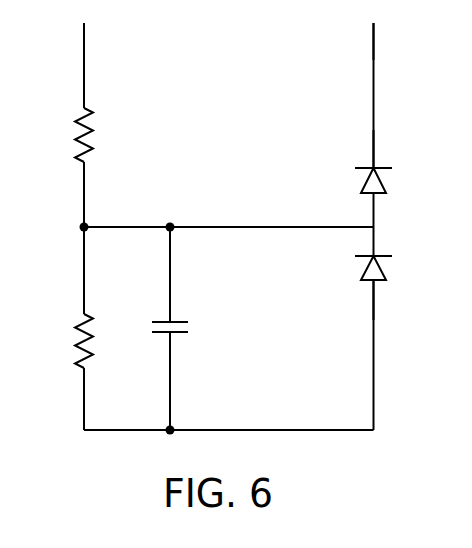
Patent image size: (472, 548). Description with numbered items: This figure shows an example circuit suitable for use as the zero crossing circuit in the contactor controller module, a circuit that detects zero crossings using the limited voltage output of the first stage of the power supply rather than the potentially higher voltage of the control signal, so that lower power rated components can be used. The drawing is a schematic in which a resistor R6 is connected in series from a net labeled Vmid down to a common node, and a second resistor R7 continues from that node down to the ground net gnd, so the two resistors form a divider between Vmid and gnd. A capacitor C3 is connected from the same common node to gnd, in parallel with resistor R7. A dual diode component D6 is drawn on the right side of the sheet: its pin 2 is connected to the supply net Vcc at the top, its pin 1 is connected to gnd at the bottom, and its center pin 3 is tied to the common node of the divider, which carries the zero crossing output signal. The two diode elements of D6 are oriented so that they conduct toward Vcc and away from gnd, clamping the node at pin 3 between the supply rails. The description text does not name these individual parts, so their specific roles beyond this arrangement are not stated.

The resistor R6 is at (58, 135).
The resistor R7 is at (59, 341).
The capacitor C3 is at (188, 327).
The dual diode D6 is at (394, 224).
The D6 pin 1 is at (363, 300).
The D6 pin 2 is at (360, 149).
The D6 pin 3 (Zero_cross node) 3 is at (349, 211).
The Vmid supply net Vmid is at (116, 40).
The Vcc supply net Vcc is at (400, 40).
The ground net gnd is at (127, 413).